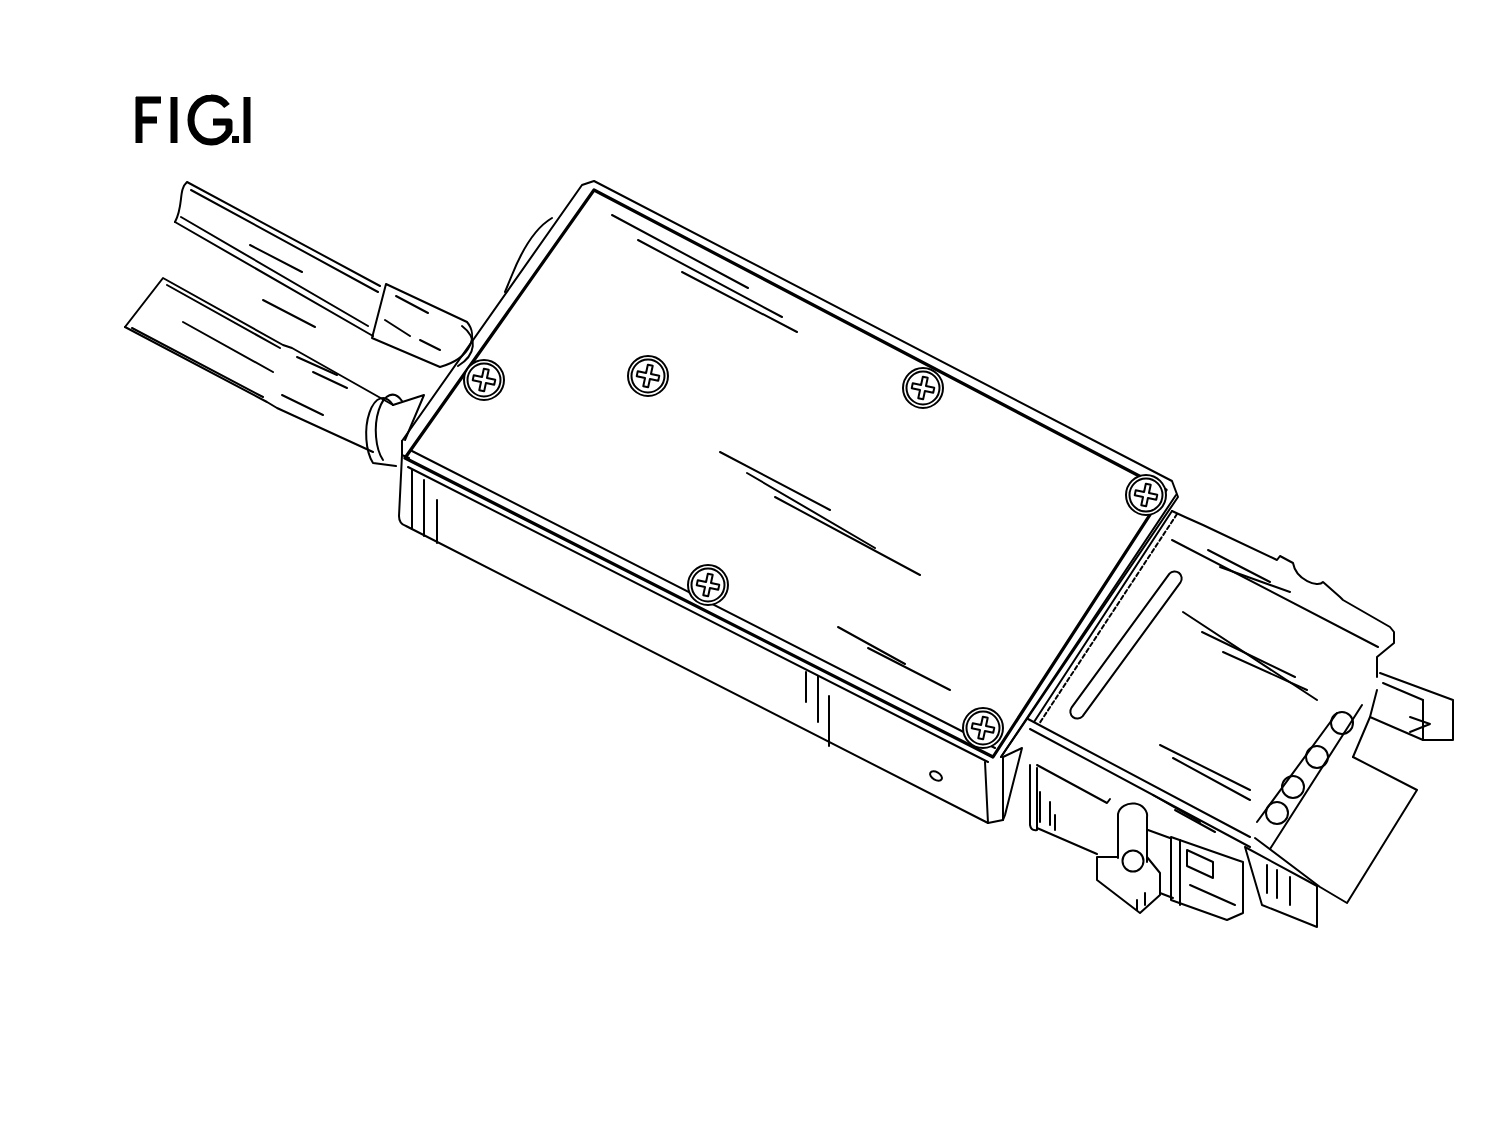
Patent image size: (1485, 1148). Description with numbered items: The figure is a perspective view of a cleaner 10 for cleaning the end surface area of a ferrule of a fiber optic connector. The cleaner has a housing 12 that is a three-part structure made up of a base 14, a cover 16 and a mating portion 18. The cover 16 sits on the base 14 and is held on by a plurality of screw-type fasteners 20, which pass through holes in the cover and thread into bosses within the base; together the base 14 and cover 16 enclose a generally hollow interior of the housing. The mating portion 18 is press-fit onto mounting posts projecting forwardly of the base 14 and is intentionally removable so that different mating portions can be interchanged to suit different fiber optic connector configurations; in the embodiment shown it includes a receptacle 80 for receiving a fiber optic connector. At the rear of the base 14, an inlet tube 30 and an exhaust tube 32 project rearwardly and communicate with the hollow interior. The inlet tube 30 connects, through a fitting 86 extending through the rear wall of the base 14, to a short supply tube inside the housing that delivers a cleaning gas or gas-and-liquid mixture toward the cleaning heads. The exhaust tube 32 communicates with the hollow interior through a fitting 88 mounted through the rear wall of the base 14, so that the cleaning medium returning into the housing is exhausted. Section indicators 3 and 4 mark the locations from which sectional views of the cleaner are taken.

The cleaner 10 is at (1093, 407).
The housing 12 is at (991, 820).
The base 14 is at (781, 690).
The cover 16 is at (831, 495).
The mating portion 18 is at (1233, 597).
The screw-type fasteners 20 is at (503, 374).
The inlet tube 30 is at (333, 270).
The exhaust tube 32 is at (269, 380).
The receptacle 80 is at (1375, 688).
The fitting 86 is at (468, 325).
The fitting 88 is at (390, 447).
The section line FIG. 3 is at (838, 333).
The section line FIG. 4 is at (268, 317).